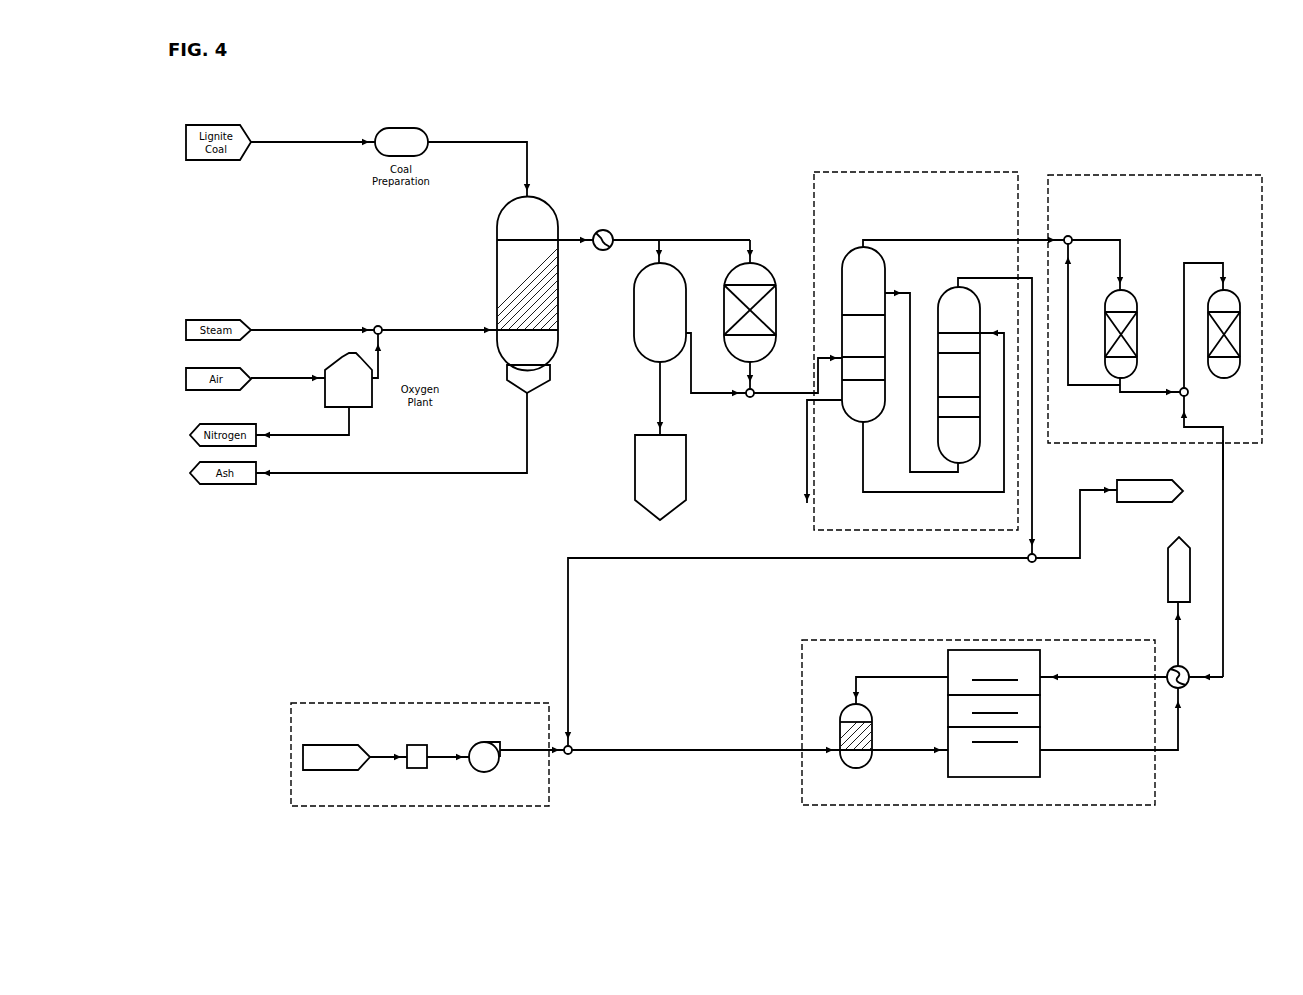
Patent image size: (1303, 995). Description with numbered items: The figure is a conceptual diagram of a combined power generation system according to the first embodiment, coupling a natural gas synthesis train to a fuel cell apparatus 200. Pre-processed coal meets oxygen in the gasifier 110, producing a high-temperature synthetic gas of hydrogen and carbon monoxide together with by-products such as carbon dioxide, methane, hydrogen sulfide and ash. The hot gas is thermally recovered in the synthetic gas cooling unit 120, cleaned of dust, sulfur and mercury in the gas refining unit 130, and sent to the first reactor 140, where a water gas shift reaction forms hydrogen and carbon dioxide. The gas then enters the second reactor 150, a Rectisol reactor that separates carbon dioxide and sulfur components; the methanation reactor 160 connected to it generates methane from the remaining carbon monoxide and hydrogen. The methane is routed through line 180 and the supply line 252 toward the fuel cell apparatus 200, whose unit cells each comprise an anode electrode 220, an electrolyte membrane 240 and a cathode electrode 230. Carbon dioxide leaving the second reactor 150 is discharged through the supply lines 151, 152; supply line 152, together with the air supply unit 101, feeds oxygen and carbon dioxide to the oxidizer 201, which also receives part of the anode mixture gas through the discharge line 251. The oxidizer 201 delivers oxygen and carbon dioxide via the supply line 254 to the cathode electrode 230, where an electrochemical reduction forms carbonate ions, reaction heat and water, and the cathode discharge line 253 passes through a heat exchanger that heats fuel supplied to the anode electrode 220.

The gasifier 110 is at (540, 198).
The synthetic gas cooling unit 120 is at (603, 250).
The gas refining unit 130 is at (665, 264).
The first reactor 140 is at (760, 264).
The second reactor 150 is at (916, 172).
The methanation reactor 160 is at (1167, 175).
The synthetic natural gas supply line 180 is at (1226, 637).
The air supply unit 101 is at (441, 703).
The supply line 151 is at (1057, 563).
The supply line 152 is at (670, 562).
The fuel cell apparatus 200 is at (822, 805).
The oxidizer 201 is at (838, 715).
The anode electrode 220 is at (1040, 658).
The cathode electrode 230 is at (1040, 764).
The electrolyte membrane 240 is at (1040, 710).
The discharge line 251 is at (900, 675).
The supply line 252 is at (1163, 690).
The discharge line 253 is at (1160, 776).
The supply line 254 is at (903, 752).